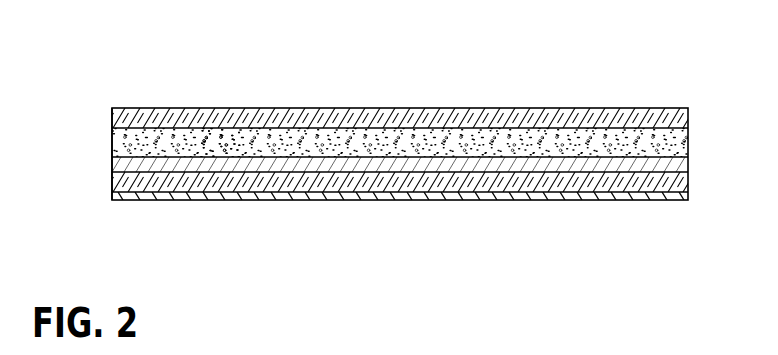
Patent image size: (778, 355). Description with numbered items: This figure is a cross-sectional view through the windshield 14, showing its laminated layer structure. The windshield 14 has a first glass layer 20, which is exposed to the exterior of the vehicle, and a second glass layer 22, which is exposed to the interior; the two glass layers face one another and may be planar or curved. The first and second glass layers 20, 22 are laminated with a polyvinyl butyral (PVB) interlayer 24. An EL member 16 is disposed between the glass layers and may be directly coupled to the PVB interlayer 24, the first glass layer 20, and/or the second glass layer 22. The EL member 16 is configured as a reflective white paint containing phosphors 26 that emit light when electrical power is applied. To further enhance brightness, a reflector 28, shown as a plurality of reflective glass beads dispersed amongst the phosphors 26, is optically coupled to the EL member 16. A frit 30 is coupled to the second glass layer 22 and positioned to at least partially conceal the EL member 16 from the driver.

The windshield 14 is at (702, 80).
The EL member 16 is at (112, 145).
The first glass layer 20 is at (510, 108).
The second glass layer 22 is at (688, 182).
The PVB interlayer 24 is at (688, 164).
The phosphors 26 is at (156, 140).
The reflector 28 is at (218, 138).
The frit 30 is at (571, 200).